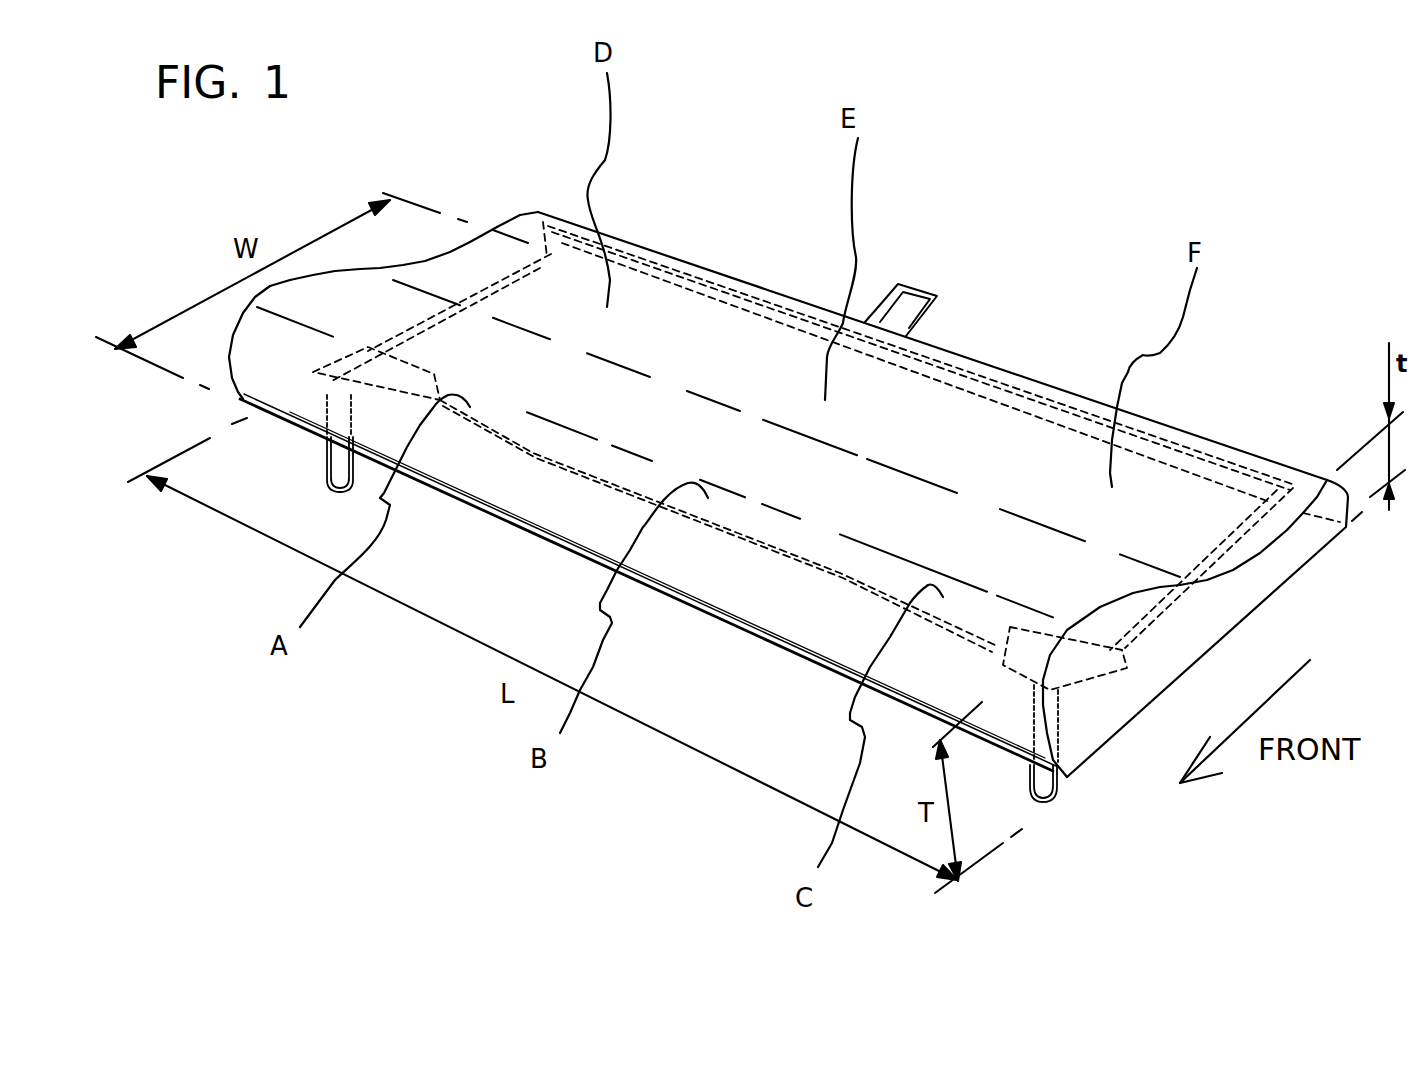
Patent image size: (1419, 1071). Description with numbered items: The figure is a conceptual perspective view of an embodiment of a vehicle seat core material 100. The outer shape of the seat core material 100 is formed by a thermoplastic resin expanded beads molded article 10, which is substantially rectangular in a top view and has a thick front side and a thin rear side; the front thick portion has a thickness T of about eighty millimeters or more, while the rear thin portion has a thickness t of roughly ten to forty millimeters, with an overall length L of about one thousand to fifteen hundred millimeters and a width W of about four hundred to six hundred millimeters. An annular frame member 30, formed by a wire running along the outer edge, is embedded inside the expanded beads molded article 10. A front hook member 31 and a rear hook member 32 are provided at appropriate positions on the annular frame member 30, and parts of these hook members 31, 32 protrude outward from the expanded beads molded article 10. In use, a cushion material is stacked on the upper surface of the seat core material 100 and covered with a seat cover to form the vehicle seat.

The vehicle seat core material 100 is at (665, 248).
The thermoplastic resin expanded beads molded article 10 is at (770, 380).
The annular frame member 30 is at (1068, 392).
The front hook member 31 is at (322, 460).
The rear hook member 32 is at (909, 283).